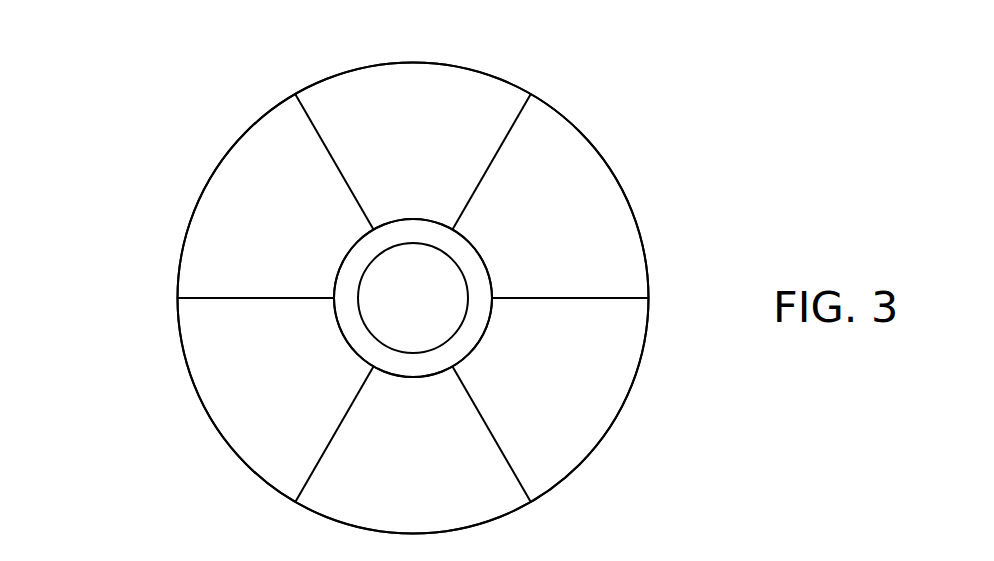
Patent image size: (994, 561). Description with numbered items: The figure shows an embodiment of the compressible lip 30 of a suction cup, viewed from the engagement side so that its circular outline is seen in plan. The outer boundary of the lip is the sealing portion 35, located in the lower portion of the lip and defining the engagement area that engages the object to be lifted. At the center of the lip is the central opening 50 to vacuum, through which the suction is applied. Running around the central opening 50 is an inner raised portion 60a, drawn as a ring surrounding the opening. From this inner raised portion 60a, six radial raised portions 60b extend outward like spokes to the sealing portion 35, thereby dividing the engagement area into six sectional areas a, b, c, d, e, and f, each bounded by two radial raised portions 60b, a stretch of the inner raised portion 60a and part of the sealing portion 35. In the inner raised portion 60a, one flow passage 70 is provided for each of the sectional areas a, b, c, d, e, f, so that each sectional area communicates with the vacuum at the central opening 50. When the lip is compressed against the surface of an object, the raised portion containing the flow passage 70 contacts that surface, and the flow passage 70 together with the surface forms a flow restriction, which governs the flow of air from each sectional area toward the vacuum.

The compressible lip 30 is at (124, 134).
The sealing portion 35 is at (230, 150).
The central opening for vacuum 50 is at (431, 312).
The inner raised portion 60a is at (393, 217).
The radial raised portion 60b is at (326, 156).
The flow passage 70 is at (414, 217).
The sectional area a is at (214, 266).
The sectional area b is at (348, 108).
The sectional area c is at (545, 146).
The sectional area d is at (613, 336).
The sectional area e is at (482, 490).
The sectional area f is at (282, 453).